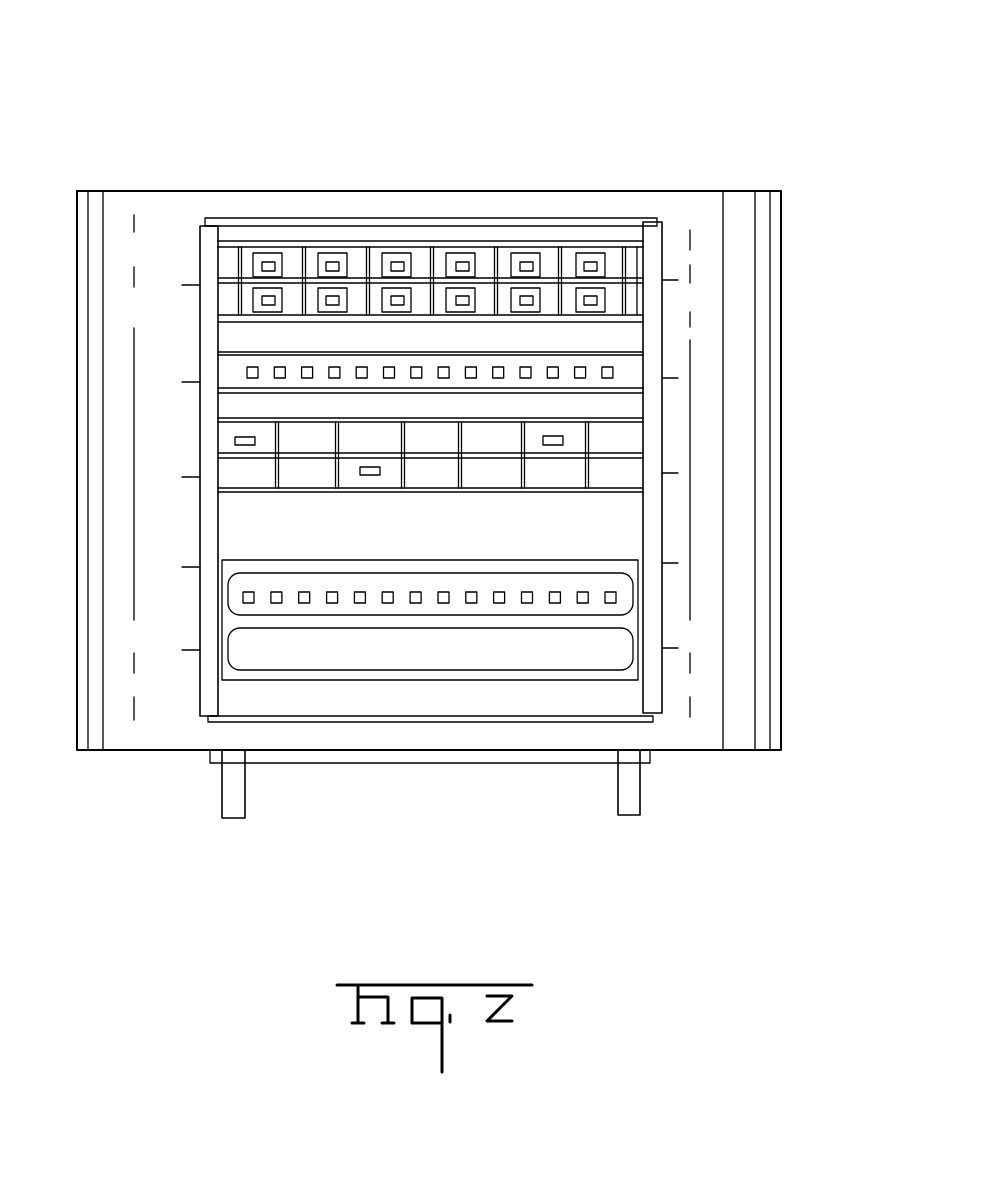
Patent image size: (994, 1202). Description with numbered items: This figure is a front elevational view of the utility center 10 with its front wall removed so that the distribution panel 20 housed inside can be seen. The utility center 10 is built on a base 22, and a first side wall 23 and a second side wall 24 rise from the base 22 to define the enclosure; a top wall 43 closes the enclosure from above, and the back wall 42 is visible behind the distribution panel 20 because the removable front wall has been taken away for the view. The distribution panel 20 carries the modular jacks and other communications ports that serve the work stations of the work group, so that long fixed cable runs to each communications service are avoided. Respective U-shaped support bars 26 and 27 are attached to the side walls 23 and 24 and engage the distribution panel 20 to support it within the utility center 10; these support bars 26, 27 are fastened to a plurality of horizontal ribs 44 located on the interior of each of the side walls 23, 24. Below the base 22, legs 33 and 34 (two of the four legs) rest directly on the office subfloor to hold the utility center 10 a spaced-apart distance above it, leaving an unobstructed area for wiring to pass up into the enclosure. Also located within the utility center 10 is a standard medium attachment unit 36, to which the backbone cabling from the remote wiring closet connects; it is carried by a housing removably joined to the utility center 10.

The utility center 10 is at (122, 142).
The distribution panel 20 is at (566, 240).
The base 22 is at (437, 760).
The first side wall 23 is at (783, 200).
The second side wall 24 is at (77, 390).
The U-shaped support bar 26 is at (665, 230).
The U-shaped support bar 27 is at (218, 232).
The leg 33 is at (242, 798).
The leg 34 is at (625, 783).
The medium attachment unit 36 is at (578, 558).
The back wall 42 is at (452, 536).
The top wall 43 is at (420, 195).
The horizontal ribs 44 is at (188, 480).